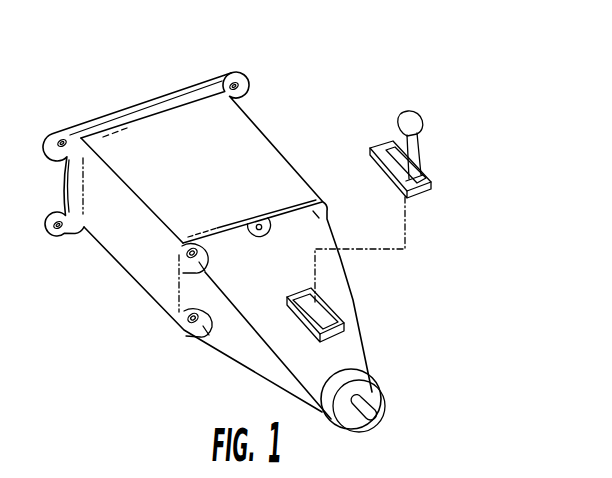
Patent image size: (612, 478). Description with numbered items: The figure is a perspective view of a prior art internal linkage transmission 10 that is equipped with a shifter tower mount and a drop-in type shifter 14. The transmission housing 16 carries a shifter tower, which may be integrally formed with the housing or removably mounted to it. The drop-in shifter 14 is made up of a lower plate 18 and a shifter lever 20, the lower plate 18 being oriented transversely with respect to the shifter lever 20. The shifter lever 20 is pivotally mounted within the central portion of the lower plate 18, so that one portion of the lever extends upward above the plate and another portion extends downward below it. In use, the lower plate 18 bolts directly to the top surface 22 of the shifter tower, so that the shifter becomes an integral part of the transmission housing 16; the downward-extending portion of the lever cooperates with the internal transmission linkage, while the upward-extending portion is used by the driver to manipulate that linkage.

The internal linkage transmission 10 is at (294, 251).
The drop-in shifter 14 is at (458, 157).
The transmission housing 16 is at (286, 161).
The lower plate 18 is at (420, 191).
The shifter lever 20 is at (411, 128).
The top surface 22 is at (316, 297).